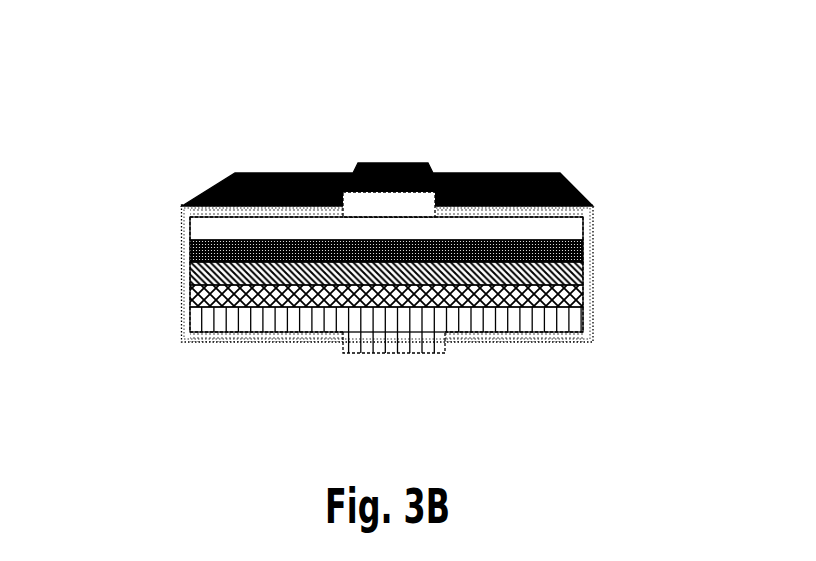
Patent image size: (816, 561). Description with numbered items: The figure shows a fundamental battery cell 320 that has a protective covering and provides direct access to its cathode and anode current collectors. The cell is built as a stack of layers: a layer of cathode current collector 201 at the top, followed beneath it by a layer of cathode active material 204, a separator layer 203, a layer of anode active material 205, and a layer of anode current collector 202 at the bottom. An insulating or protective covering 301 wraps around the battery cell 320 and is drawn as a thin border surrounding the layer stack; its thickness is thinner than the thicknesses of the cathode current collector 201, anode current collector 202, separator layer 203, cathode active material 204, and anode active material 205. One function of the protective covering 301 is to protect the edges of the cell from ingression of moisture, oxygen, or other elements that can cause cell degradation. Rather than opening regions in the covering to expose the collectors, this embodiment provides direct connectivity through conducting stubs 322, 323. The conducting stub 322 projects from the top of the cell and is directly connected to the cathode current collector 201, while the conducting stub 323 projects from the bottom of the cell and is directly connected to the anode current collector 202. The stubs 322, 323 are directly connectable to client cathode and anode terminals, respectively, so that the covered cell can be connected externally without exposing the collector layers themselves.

The fundamental battery cell 320 is at (563, 74).
The conducting stub 322 is at (396, 163).
The conducting stub 323 is at (407, 347).
The protective covering 301 is at (190, 202).
The cathode current collector 201 is at (205, 223).
The cathode active material 204 is at (198, 258).
The separator layer 203 is at (193, 273).
The anode active material 205 is at (193, 298).
The anode current collector 202 is at (212, 318).